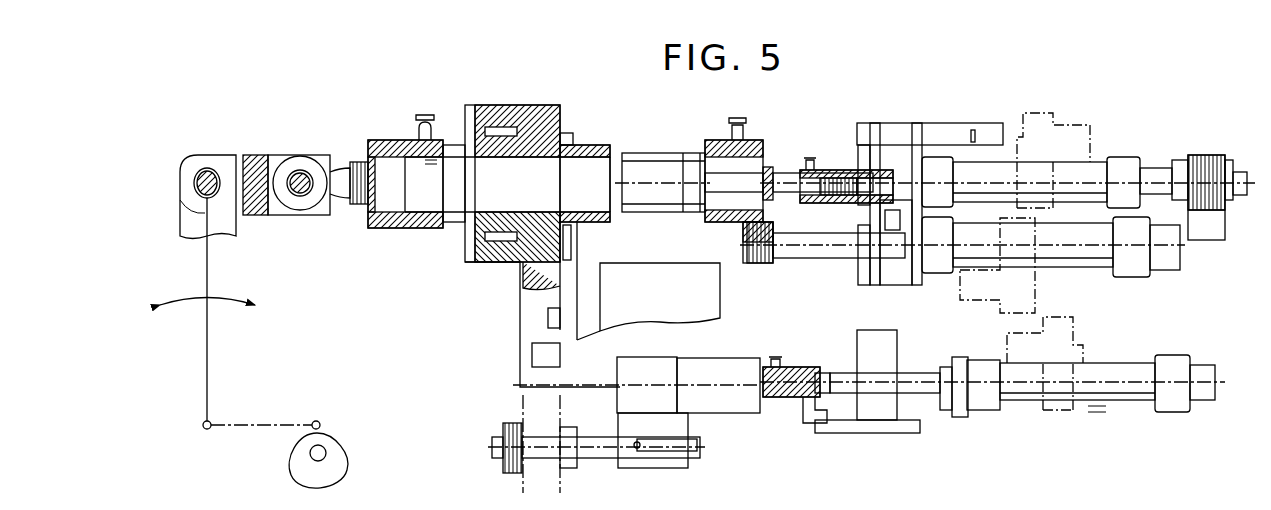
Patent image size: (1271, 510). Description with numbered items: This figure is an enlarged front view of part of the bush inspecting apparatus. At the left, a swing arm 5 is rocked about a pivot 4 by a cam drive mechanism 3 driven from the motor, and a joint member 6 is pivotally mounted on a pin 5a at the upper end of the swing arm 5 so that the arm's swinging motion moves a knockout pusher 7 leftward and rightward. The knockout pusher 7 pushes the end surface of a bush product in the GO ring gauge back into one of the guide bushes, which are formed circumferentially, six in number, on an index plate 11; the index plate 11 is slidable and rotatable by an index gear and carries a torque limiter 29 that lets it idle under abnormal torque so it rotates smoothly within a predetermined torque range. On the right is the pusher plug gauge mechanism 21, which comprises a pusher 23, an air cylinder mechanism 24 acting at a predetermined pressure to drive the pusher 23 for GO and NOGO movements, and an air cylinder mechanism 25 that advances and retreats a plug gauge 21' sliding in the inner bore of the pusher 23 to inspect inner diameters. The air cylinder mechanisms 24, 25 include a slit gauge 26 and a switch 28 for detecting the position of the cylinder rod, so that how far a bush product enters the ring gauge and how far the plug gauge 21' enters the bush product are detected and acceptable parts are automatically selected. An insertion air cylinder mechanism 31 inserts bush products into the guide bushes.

The cam drive mechanism 3 is at (342, 470).
The pivot 4 is at (211, 429).
The swing arm 5 is at (209, 373).
The pin 5a is at (200, 184).
The joint member 6 is at (256, 160).
The knockout pusher 7 is at (455, 214).
The index plate 11 is at (570, 300).
The pusher plug gauge mechanism 21 is at (662, 155).
The plug gauge 21' is at (717, 190).
The pusher 23 is at (643, 220).
The air cylinder mechanism 24 is at (1092, 267).
The air cylinder mechanism for the plug gauges 25 is at (1092, 170).
The slit gauge 26 is at (997, 130).
The switch 28 is at (1067, 125).
The torque limiter 29 is at (671, 306).
The insertion air cylinder mechanism 31 is at (1027, 395).